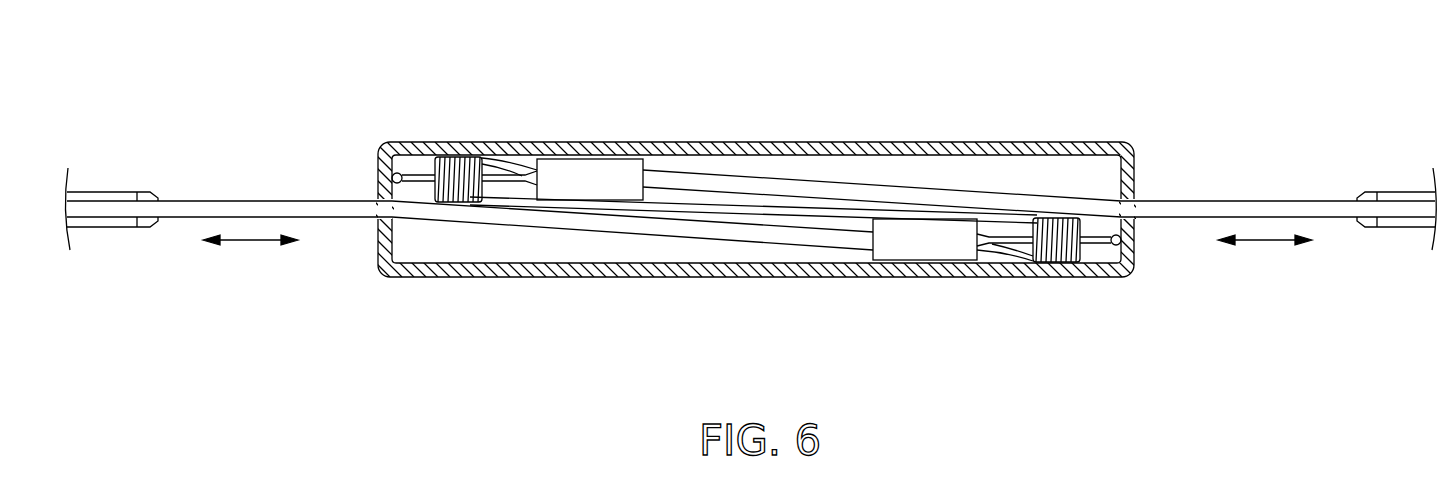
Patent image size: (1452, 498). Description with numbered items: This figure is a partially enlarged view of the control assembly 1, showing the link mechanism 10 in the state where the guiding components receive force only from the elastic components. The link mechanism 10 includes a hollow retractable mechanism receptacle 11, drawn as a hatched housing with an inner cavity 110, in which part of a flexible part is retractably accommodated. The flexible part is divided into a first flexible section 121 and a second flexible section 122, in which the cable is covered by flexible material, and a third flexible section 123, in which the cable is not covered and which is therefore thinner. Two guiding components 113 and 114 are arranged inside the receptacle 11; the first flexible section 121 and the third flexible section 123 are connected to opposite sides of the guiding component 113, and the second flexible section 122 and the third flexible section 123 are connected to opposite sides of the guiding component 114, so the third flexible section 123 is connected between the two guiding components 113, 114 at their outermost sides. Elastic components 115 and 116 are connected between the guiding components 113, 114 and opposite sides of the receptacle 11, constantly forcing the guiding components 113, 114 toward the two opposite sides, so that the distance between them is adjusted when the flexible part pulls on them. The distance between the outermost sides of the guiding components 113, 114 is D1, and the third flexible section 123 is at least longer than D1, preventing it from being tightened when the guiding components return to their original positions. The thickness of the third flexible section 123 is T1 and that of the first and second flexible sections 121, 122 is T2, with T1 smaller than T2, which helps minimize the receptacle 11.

The control assembly 1 is at (175, 45).
The link mechanism 10 is at (358, 92).
The retractable mechanism receptacle 11 is at (882, 122).
The housing inner cavity 110 is at (1003, 145).
The guiding component 113 is at (922, 245).
The guiding component 114 is at (592, 175).
The elastic component 115 is at (1057, 255).
The elastic component 116 is at (456, 172).
The first flexible section 121 is at (258, 207).
The second flexible section 122 is at (1268, 207).
The third flexible section 123 is at (757, 208).
The thickness of the third flexible section T1 is at (709, 258).
The thickness of the first and second flexible sections T2 is at (816, 242).
The distance between outermost sides of the guiding components D1 is at (537, 200).